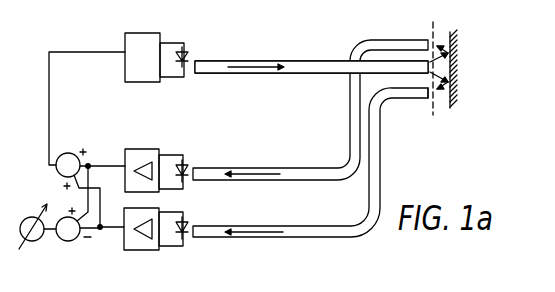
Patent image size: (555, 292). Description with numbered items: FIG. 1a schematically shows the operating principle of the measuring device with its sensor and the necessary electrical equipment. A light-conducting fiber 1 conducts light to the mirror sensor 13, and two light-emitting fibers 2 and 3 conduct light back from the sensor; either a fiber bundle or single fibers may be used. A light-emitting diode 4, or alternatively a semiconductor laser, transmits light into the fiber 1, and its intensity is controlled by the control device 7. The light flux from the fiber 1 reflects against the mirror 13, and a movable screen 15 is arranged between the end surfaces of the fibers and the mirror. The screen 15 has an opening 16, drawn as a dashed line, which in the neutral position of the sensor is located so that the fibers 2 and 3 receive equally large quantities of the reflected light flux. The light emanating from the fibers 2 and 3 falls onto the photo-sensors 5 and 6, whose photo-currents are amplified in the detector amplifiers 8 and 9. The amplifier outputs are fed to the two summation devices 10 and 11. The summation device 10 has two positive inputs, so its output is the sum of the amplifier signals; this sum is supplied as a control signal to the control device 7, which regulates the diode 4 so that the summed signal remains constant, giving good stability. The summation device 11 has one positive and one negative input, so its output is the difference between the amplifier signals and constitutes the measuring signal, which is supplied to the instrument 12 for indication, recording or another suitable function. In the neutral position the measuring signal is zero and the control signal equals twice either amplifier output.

The fiber 1 is at (284, 60).
The fiber 2 is at (299, 167).
The fiber 3 is at (305, 226).
The light-emitting diode 4 is at (189, 56).
The photo-sensor 5 is at (190, 164).
The photo-sensor 6 is at (190, 221).
The control device 7 is at (125, 43).
The detector amplifier 8 is at (143, 148).
The detector amplifier 9 is at (146, 249).
The summation device 10 is at (70, 152).
The summation device 11 is at (70, 242).
The instrument 12 is at (27, 216).
The mirror sensor 13 is at (455, 57).
The movable screen 15 is at (432, 25).
The opening 16 is at (427, 90).